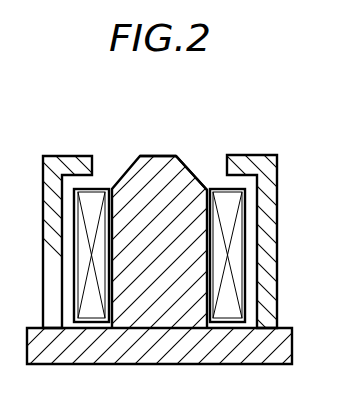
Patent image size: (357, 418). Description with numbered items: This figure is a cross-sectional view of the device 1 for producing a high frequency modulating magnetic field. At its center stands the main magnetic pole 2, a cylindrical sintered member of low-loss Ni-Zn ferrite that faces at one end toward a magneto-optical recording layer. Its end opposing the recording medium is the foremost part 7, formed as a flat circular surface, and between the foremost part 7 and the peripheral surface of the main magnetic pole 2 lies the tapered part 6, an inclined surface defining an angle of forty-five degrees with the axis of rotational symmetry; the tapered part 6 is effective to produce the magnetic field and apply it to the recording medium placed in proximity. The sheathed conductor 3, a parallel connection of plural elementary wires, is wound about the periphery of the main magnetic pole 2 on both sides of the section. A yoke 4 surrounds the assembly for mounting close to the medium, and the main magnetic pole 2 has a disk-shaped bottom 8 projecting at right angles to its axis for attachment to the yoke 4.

The device for producing a high frequency modulating magnetic field 1 is at (236, 403).
The main magnetic pole 2 is at (138, 185).
The sheathed conductor 3 is at (238, 220).
The yoke 4 is at (257, 162).
The tapered part 6 is at (189, 163).
The foremost part 7 is at (157, 156).
The bottom 8 is at (287, 342).